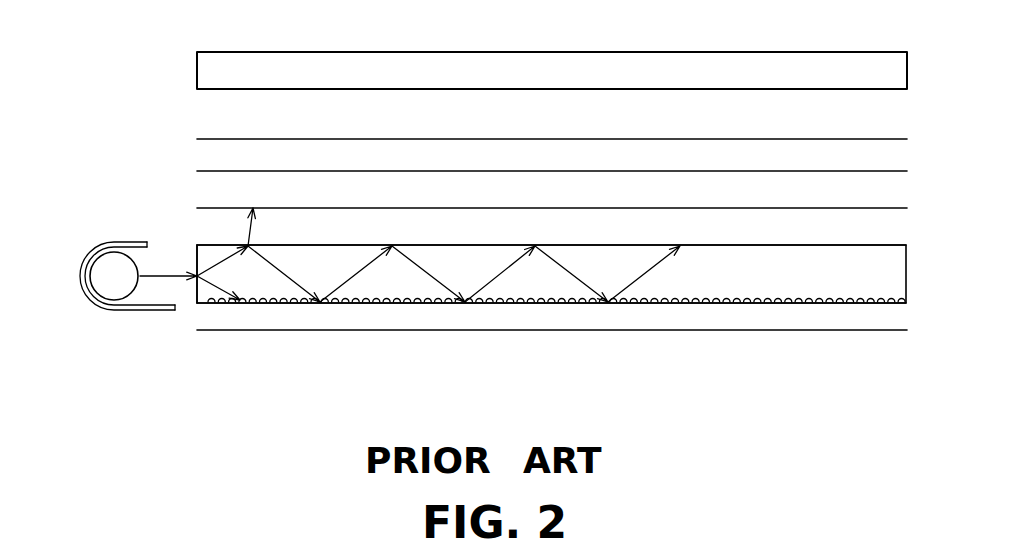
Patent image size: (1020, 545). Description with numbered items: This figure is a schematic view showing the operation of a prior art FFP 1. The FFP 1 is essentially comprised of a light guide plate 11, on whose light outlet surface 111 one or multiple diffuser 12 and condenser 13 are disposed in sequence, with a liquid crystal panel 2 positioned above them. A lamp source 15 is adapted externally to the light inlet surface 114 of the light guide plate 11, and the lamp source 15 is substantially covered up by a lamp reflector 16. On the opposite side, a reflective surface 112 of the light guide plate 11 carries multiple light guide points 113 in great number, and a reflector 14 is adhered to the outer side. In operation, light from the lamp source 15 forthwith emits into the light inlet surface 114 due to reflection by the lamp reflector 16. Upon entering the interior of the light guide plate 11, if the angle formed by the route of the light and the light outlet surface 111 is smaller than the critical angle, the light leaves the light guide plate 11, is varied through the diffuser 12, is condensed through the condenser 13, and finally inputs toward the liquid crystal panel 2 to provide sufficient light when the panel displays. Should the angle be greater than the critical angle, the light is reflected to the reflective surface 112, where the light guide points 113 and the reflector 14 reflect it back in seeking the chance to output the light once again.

The FFP 1 is at (94, 156).
The liquid crystal panel 2 is at (205, 65).
The light guide plate 11 is at (425, 278).
The light outlet surface 111 is at (197, 243).
The reflective surface 112 is at (297, 304).
The light guide points 113 is at (207, 305).
The light inlet surface 114 is at (194, 290).
The diffuser 12 is at (205, 208).
The condenser 13 is at (230, 139).
The reflector 14 is at (264, 331).
The lamp source 15 is at (101, 257).
The lamp reflector 16 is at (92, 299).